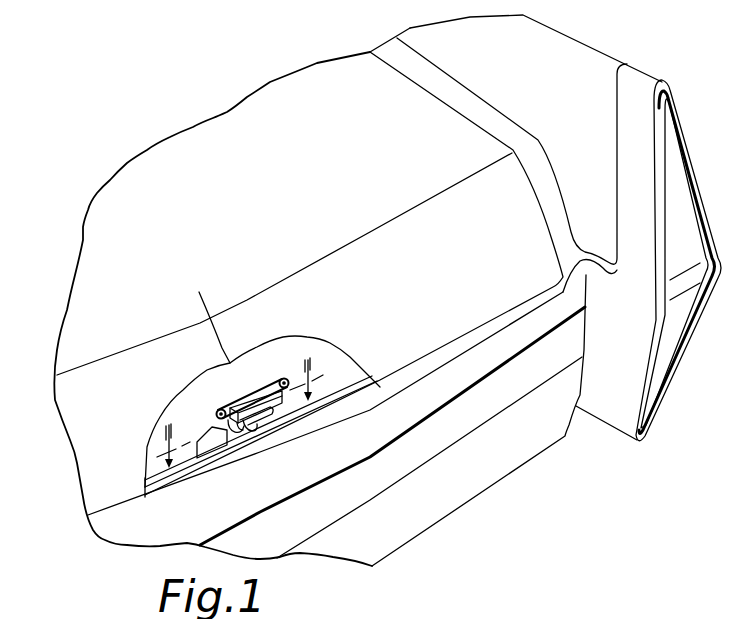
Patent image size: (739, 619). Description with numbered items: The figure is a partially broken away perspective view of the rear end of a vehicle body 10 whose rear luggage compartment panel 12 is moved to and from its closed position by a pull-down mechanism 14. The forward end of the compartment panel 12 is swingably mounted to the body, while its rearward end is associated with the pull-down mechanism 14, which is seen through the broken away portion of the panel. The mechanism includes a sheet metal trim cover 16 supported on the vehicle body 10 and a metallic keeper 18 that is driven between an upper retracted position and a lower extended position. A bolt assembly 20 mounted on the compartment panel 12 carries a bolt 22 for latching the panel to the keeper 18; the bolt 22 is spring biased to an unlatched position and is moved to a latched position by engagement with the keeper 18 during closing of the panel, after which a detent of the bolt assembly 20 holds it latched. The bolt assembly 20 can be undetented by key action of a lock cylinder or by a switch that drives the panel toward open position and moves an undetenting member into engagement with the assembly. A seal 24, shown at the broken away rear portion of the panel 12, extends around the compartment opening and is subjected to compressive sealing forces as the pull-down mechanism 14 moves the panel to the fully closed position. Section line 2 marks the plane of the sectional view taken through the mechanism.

The vehicle body 10 is at (582, 64).
The rear luggage compartment panel 12 is at (98, 256).
The pull-down mechanism 14 is at (342, 371).
The sheet metal trim cover 16 is at (213, 443).
The keeper 18 is at (229, 447).
The bolt assembly 20 is at (278, 382).
The bolt 22 is at (243, 430).
The seal 24 is at (307, 416).
The section line 2- 2 is at (240, 404).